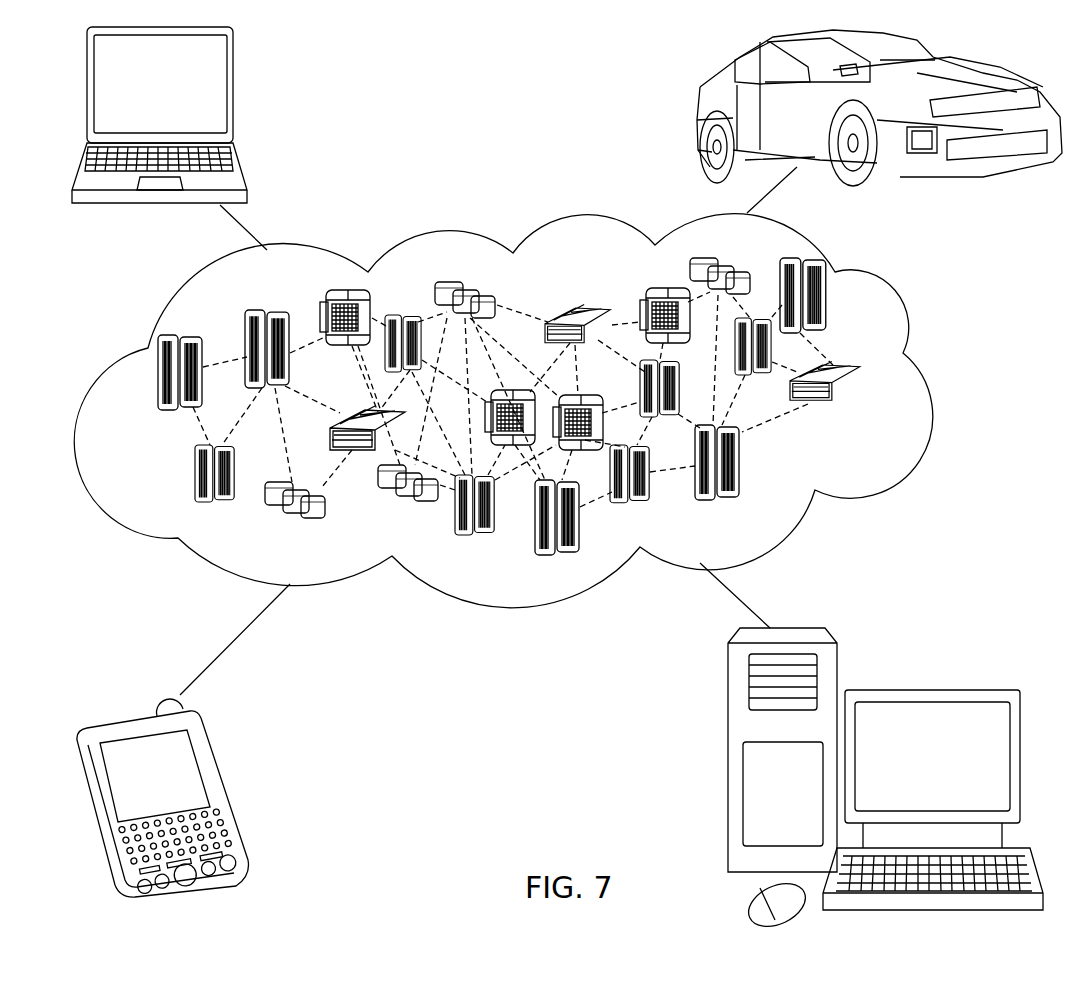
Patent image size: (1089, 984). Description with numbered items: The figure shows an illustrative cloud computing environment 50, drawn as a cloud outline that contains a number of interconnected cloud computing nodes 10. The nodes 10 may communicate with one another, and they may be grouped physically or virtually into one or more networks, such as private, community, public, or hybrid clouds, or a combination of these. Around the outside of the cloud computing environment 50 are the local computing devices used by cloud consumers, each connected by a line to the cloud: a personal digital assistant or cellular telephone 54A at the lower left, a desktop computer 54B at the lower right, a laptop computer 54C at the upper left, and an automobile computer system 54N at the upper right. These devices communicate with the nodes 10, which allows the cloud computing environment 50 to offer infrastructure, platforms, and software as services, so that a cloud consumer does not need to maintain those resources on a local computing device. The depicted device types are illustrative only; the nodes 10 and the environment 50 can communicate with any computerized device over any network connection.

The laptop computer 54C is at (236, 87).
The automobile computer system 54N is at (697, 112).
The cloud computing environment 50 is at (930, 381).
The cloud computing node 10 is at (869, 417).
The personal digital assistant or cellular telephone 54A is at (226, 790).
The desktop computer 54B is at (930, 688).